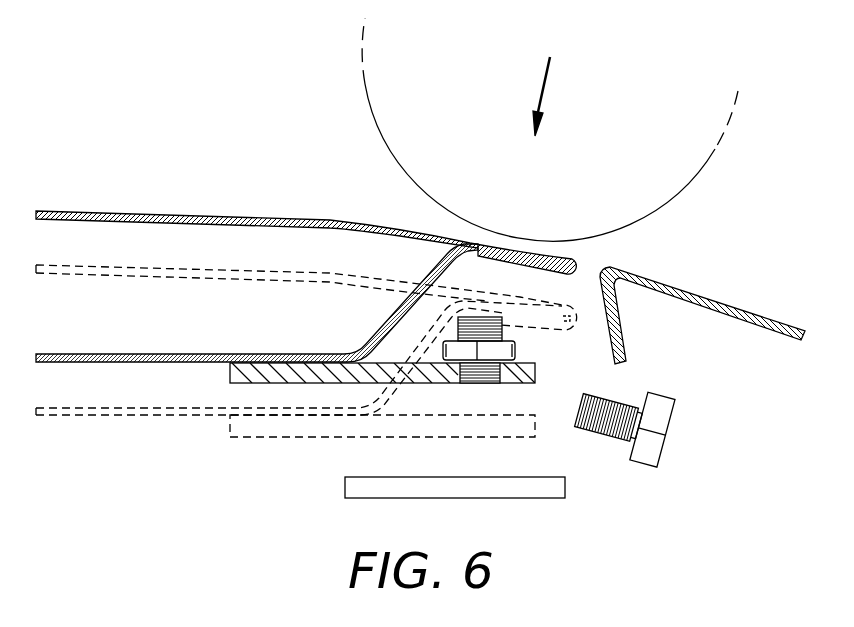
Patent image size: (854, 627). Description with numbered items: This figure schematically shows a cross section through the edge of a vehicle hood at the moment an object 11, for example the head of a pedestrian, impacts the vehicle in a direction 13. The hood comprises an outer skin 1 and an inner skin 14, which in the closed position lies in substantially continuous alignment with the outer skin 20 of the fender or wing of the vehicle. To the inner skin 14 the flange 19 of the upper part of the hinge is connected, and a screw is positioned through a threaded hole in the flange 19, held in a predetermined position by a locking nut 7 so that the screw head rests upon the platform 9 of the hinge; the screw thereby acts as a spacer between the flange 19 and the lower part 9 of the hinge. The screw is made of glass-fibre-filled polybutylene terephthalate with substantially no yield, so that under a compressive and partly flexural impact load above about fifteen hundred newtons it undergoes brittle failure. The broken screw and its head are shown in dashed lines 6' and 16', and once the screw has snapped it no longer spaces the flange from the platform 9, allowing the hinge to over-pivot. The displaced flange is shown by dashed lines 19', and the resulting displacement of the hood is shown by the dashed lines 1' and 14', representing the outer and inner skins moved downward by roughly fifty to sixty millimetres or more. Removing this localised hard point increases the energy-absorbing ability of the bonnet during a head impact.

The hood outer skin 1 is at (306, 214).
The displaced hood outer skin 1' is at (306, 303).
The locking nut 7 is at (518, 351).
The platform of the hinge 9 is at (567, 487).
The object 11 is at (694, 183).
The impact direction 13 is at (545, 85).
The hood inner skin 14 is at (257, 303).
The displaced hood inner skin 14' is at (299, 391).
The broken screw head 16' is at (685, 433).
The flange of the hinge 19 is at (420, 377).
The displaced flange 19' is at (382, 460).
The fender outer skin 20 is at (738, 300).
The broken screw 6' is at (621, 393).